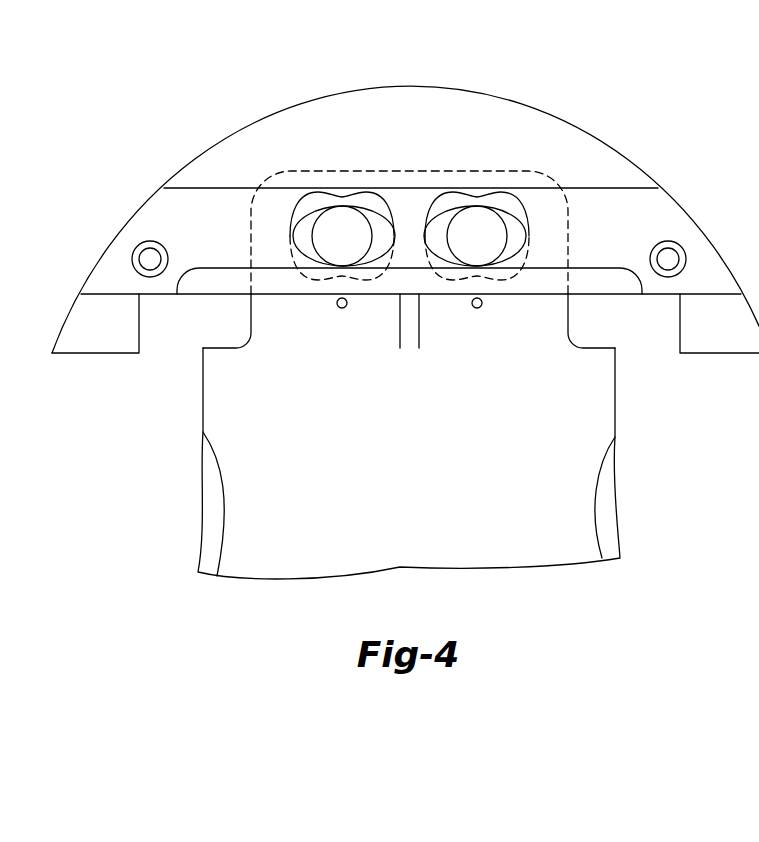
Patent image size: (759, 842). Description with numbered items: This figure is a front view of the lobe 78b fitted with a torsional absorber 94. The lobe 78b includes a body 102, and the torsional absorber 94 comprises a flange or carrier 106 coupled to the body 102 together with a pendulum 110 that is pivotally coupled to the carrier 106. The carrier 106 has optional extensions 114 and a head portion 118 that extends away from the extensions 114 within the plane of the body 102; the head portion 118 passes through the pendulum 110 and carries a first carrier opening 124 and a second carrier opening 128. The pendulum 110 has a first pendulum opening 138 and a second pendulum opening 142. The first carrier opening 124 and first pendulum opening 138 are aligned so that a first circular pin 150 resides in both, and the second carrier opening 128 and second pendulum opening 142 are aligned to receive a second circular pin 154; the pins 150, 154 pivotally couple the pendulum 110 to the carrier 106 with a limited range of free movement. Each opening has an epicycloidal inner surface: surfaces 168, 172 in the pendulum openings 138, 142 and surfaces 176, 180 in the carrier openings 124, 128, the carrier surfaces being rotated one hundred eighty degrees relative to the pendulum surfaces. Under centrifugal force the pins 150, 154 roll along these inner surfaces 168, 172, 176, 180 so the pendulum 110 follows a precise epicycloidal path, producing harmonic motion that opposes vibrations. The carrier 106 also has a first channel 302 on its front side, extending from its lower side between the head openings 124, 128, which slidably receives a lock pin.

The torsional absorber 94 is at (405, 206).
The pendulum 110 is at (637, 170).
The extensions 114 is at (87, 343).
The carrier 106 is at (572, 320).
The first channel 302 is at (387, 318).
The head portion 118 is at (423, 172).
The second pendulum opening 142 is at (316, 188).
The inner surface of second pendulum opening 172 is at (366, 188).
The second circular pin 154 is at (330, 243).
The second carrier opening 128 is at (317, 283).
The inner surface of second carrier opening 180 is at (372, 283).
The first pendulum opening 138 is at (504, 188).
The inner surface of first pendulum opening 168 is at (450, 188).
The first circular pin 150 is at (488, 243).
The inner surface of first carrier opening 176 is at (449, 283).
The first carrier opening 124 is at (502, 283).
The body 102 is at (558, 537).
The lobe 78b is at (200, 507).